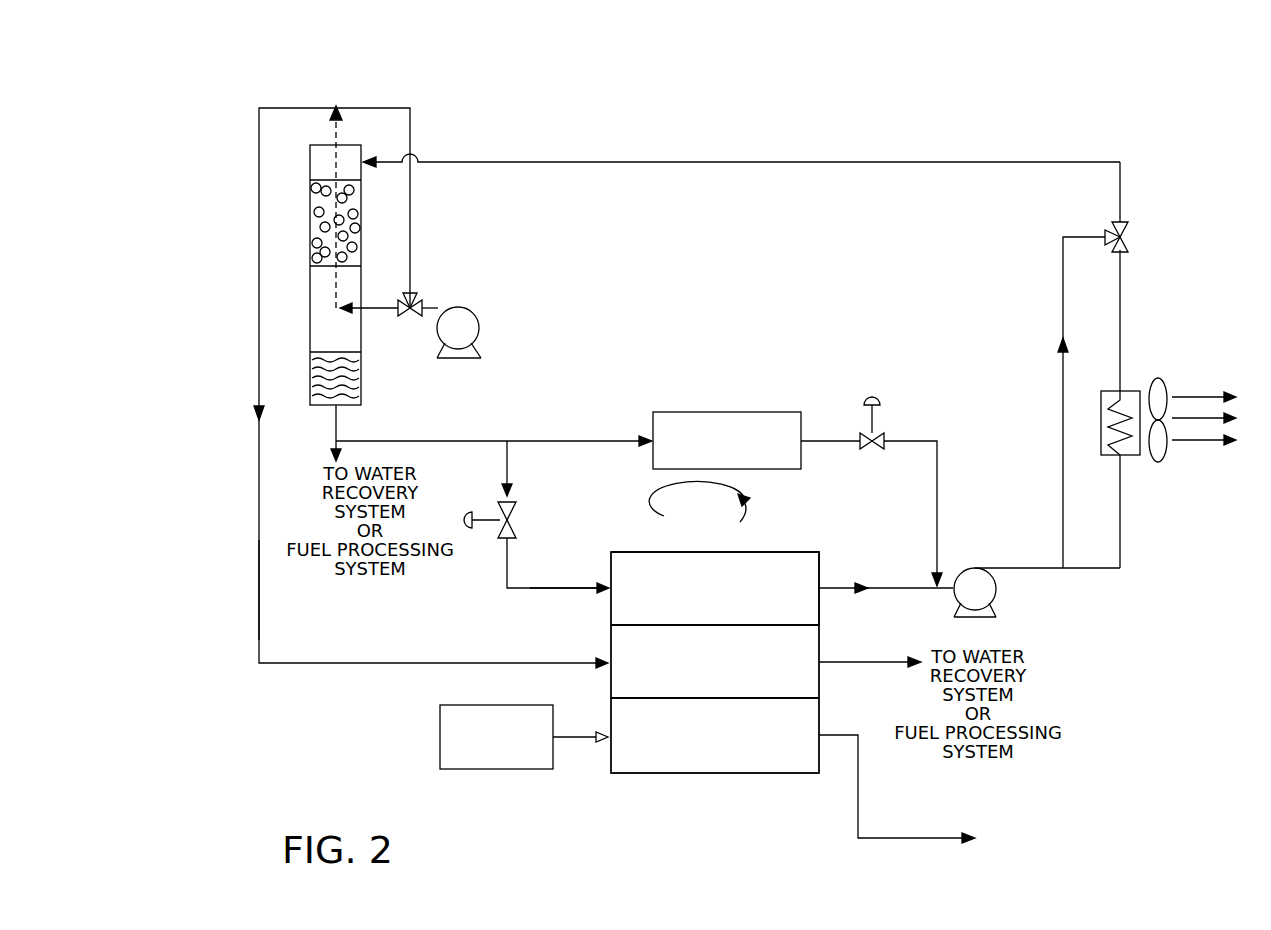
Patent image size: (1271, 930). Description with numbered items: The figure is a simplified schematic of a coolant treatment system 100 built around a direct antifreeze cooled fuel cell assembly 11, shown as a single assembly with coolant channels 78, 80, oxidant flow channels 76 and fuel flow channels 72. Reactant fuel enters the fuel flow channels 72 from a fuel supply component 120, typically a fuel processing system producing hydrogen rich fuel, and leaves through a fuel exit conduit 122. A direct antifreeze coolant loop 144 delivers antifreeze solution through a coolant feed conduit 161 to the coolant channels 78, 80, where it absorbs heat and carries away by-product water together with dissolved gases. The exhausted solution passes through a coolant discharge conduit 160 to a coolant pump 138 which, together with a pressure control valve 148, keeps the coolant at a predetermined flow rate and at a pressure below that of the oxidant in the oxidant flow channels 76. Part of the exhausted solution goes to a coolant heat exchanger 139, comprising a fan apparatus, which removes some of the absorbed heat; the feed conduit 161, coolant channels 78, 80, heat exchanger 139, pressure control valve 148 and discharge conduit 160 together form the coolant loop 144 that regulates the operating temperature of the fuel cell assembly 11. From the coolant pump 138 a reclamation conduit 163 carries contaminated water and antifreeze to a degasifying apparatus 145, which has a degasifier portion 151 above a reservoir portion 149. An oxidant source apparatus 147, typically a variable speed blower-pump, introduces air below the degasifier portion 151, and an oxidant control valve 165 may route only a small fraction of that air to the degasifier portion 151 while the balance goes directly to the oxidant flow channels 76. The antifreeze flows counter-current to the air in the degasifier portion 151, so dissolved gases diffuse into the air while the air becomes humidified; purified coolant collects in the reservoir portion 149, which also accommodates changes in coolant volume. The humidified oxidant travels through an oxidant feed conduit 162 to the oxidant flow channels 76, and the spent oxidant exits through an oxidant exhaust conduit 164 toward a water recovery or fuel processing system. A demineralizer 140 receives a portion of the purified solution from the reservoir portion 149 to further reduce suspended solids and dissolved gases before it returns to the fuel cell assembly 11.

The coolant treatment system 100 is at (440, 68).
The fuel cell assembly 11 is at (700, 800).
The fuel flow channels 72 is at (625, 772).
The oxidant flow channels 76 is at (800, 628).
The coolant channel 78 is at (790, 570).
The coolant channel 80 is at (790, 570).
The fuel supply component 120 is at (495, 768).
The fuel exit conduit 122 is at (860, 762).
The coolant pump 138 is at (982, 584).
The coolant heat exchanger 139 is at (1134, 378).
The demineralizer 140 is at (690, 430).
The direct antifreeze coolant loop 144 is at (664, 516).
The degasifying apparatus 145 is at (296, 226).
The oxidant source apparatus 147 is at (465, 326).
The pressure control valve 148 is at (550, 502).
The reservoir portion 149 is at (352, 378).
The degasifier portion 151 is at (355, 200).
The coolant discharge conduit 160 is at (835, 588).
The coolant feed conduit 161 is at (560, 592).
The oxidant feed conduit 162 is at (258, 555).
The reclamation conduit 163 is at (472, 162).
The oxidant exhaust conduit 164 is at (845, 662).
The oxidant control valve 165 is at (446, 292).